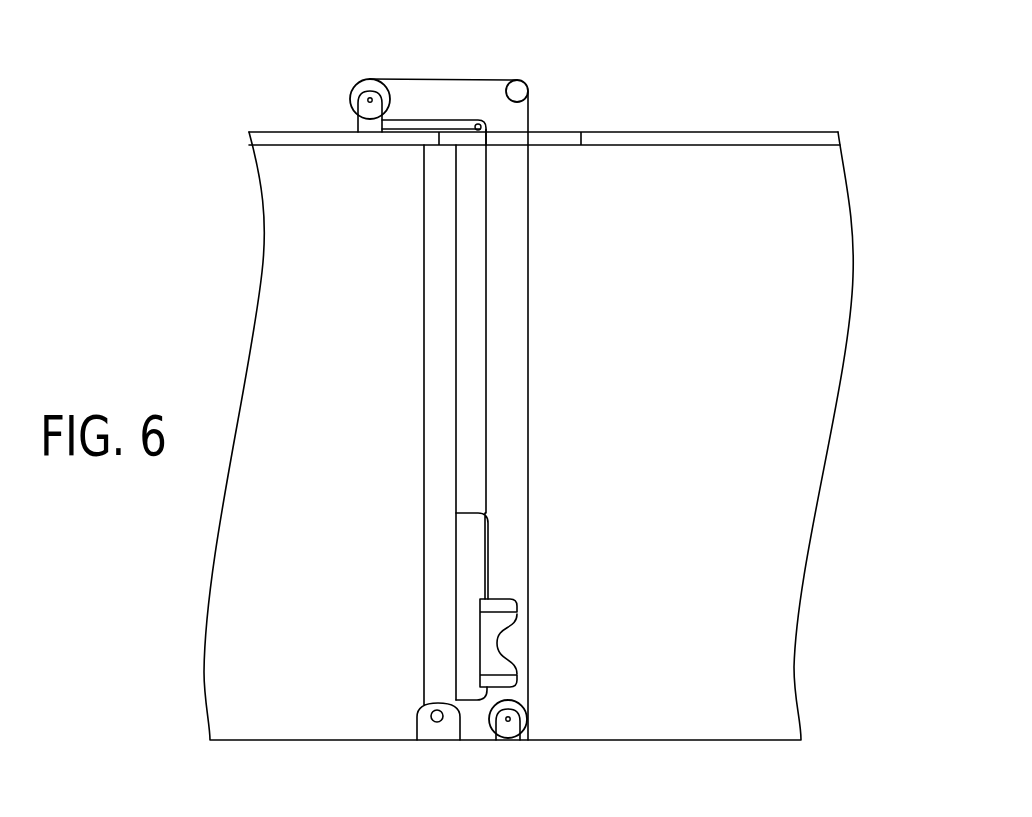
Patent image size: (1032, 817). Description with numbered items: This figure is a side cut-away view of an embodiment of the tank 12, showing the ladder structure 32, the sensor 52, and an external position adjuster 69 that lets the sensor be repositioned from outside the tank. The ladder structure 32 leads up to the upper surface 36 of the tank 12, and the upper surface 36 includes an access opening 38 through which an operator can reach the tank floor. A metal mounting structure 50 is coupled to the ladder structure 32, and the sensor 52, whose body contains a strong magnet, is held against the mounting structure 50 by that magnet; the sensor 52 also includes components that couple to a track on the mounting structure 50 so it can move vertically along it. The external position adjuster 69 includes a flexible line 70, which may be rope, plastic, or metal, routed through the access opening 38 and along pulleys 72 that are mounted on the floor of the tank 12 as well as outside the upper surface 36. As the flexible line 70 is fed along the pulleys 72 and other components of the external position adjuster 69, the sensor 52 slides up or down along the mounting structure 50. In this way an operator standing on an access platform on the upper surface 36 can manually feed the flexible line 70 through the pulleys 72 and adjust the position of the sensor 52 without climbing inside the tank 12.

The tank 12 is at (884, 270).
The ladder structure 32 is at (408, 450).
The upper surface 36 is at (712, 138).
The access opening 38 is at (560, 112).
The mounting structure 50 is at (466, 565).
The sensor 52 is at (487, 640).
The external position adjuster 69 is at (535, 62).
The flexible line 70 is at (528, 355).
The pulleys 72 is at (518, 80).